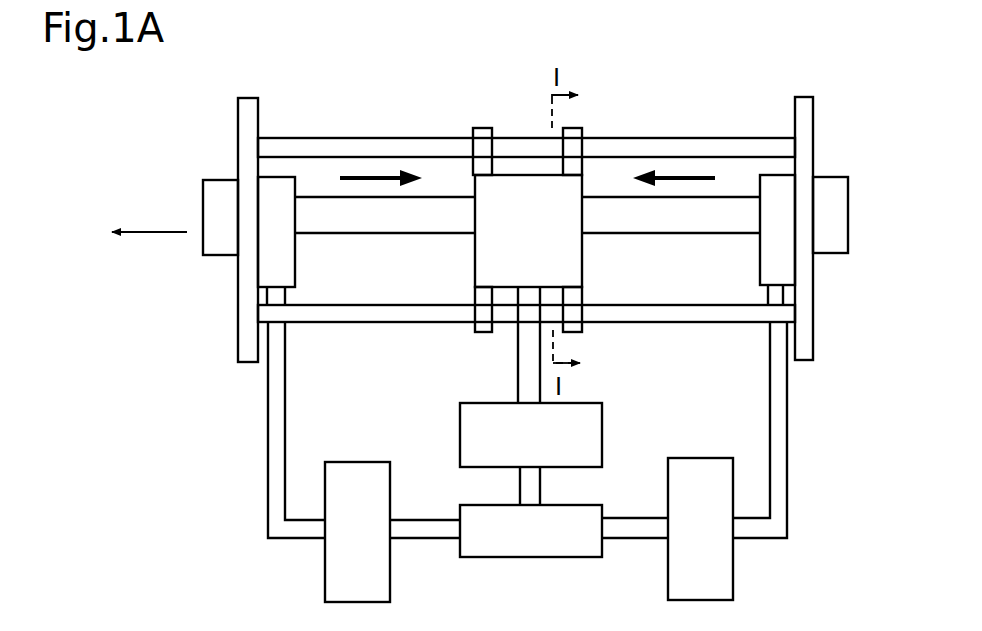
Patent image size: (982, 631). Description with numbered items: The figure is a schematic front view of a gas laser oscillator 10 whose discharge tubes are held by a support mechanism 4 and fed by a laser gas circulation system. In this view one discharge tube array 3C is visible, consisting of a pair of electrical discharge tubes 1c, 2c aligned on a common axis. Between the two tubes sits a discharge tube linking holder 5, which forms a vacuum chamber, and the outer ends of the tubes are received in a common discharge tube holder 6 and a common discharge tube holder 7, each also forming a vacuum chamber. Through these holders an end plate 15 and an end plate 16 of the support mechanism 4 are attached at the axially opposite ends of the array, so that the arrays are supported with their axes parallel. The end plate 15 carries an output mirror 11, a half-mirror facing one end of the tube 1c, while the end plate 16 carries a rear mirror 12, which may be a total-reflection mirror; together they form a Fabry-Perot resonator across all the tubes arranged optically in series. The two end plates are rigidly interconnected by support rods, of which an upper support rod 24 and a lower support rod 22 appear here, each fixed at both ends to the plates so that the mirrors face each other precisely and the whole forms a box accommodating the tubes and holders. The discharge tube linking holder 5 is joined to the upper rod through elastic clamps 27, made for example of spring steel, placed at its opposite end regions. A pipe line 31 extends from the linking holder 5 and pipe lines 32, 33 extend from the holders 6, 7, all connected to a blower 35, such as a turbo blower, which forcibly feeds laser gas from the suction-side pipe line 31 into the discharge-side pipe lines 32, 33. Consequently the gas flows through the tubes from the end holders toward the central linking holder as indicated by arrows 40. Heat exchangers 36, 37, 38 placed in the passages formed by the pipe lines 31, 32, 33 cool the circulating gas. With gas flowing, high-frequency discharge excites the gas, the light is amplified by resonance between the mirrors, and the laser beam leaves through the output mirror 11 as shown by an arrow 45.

The gas laser oscillator 10 is at (330, 78).
The support mechanism 4 is at (523, 127).
The discharge tube linking holder 5 is at (570, 188).
The discharge tube holder 6 is at (277, 185).
The discharge tube holder 7 is at (774, 172).
The output mirror 11 is at (225, 188).
The rear mirror 12 is at (830, 188).
The end plate 15 is at (248, 104).
The end plate 16 is at (804, 103).
The support rod 24 is at (362, 146).
The support rod 22 is at (403, 318).
The clamp 27 is at (485, 135).
The electrical discharge tube 1c is at (428, 226).
The electrical discharge tube 2c is at (687, 224).
The discharge tube array 3C is at (373, 236).
The arrow 40 is at (388, 176).
The arrow 45 is at (155, 234).
The pipe line 31 is at (526, 392).
The pipe line 32 is at (268, 410).
The pipe line 33 is at (772, 428).
The blower 35 is at (583, 503).
The heat exchanger 36 is at (602, 422).
The heat exchanger 37 is at (325, 563).
The heat exchanger 38 is at (733, 562).